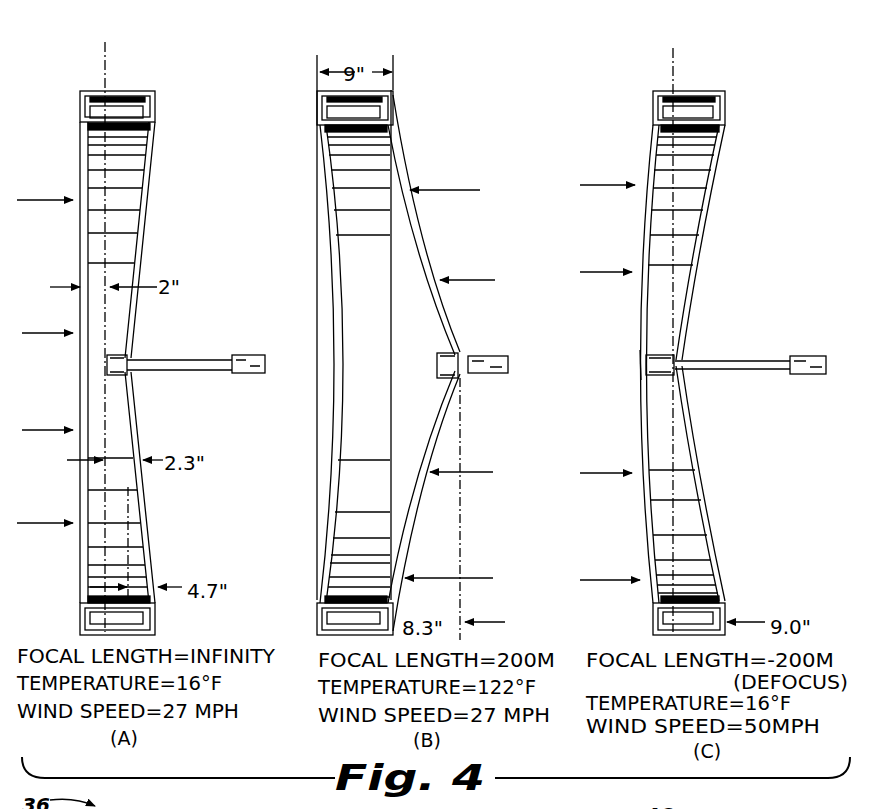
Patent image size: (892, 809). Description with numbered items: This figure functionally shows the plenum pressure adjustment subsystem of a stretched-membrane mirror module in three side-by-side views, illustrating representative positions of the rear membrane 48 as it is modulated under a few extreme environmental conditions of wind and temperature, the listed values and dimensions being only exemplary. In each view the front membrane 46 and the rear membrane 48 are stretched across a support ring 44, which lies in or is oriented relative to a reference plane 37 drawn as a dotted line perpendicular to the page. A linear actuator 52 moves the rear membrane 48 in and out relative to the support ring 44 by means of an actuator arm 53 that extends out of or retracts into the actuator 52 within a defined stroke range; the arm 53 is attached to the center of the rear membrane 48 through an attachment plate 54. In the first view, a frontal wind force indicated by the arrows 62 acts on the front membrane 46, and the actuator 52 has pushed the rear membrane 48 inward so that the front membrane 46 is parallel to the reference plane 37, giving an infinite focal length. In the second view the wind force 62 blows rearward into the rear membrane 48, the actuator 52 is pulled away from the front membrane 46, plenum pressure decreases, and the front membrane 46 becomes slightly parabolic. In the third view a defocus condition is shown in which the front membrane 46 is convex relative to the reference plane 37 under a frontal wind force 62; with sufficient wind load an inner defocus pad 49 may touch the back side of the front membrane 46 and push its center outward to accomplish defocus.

The reference plane 37 is at (108, 57).
The support ring 44 is at (130, 90).
The front membrane 46 is at (80, 152).
The rear membrane 48 is at (152, 168).
The inner defocus pad 49 is at (640, 378).
The linear actuator 52 is at (250, 374).
The actuator arm 53 is at (200, 372).
The attachment plate 54 is at (127, 378).
The wind force arrows 62 is at (40, 200).